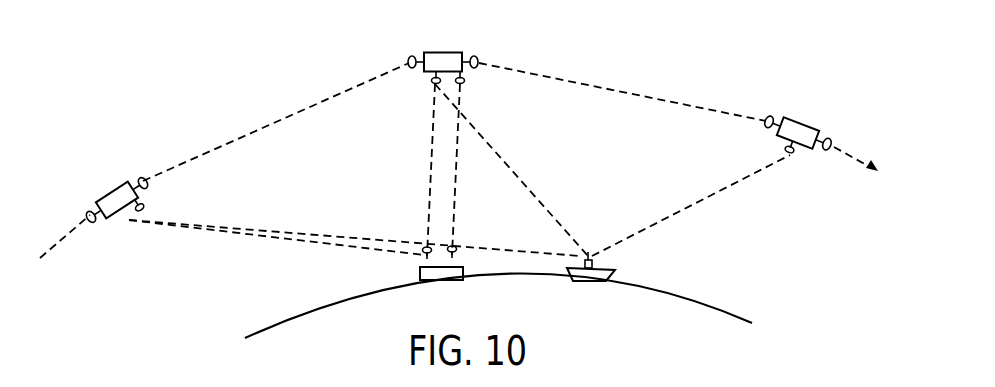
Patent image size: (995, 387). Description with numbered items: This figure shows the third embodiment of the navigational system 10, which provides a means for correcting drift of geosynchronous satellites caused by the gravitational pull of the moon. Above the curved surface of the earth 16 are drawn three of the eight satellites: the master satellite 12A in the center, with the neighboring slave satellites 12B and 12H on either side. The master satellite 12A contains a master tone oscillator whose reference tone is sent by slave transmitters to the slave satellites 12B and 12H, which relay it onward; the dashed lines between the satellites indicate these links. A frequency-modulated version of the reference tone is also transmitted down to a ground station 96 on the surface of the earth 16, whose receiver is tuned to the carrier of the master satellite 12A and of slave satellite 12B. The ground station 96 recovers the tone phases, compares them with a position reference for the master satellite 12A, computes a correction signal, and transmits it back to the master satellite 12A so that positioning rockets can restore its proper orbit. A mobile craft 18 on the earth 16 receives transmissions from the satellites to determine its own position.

The navigational system 10 is at (664, 86).
The master satellite 12A is at (438, 53).
The slave satellite 12B is at (121, 188).
The slave satellite 12H is at (797, 121).
The ground station 96 is at (420, 273).
The mobile craft 18 is at (603, 266).
The earth 16 is at (662, 292).